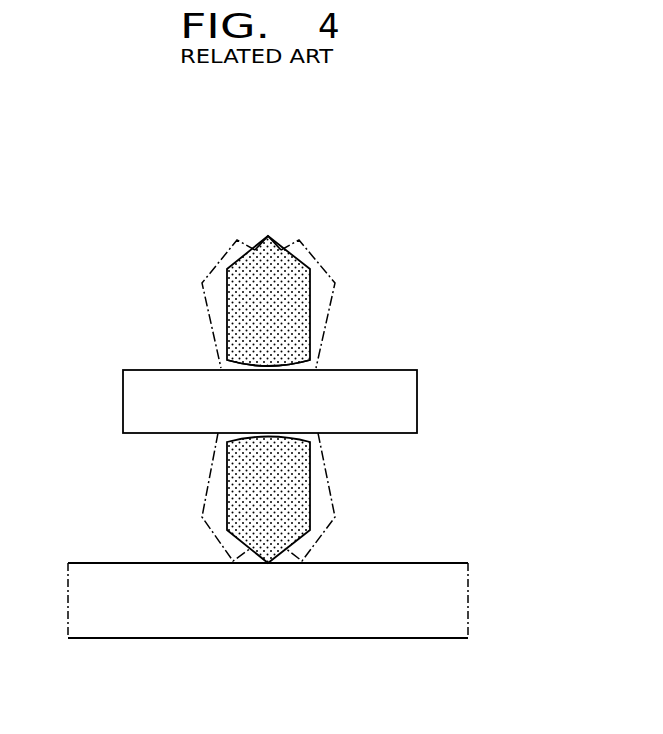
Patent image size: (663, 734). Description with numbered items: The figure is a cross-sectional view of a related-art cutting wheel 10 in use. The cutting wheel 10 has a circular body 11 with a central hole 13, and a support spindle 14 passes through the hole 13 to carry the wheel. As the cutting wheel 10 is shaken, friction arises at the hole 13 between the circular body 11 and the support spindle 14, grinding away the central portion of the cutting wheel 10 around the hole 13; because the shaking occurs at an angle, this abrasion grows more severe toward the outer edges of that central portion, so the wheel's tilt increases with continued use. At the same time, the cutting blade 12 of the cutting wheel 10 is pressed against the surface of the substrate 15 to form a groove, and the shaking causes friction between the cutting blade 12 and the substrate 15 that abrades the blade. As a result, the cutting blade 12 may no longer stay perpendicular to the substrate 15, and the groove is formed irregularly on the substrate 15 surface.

The cutting wheel 10 is at (186, 259).
The circular body 11 is at (303, 297).
The cutting blade 12 is at (262, 224).
The hole 13 is at (312, 361).
The support spindle 14 is at (408, 402).
The substrate 15 is at (462, 602).